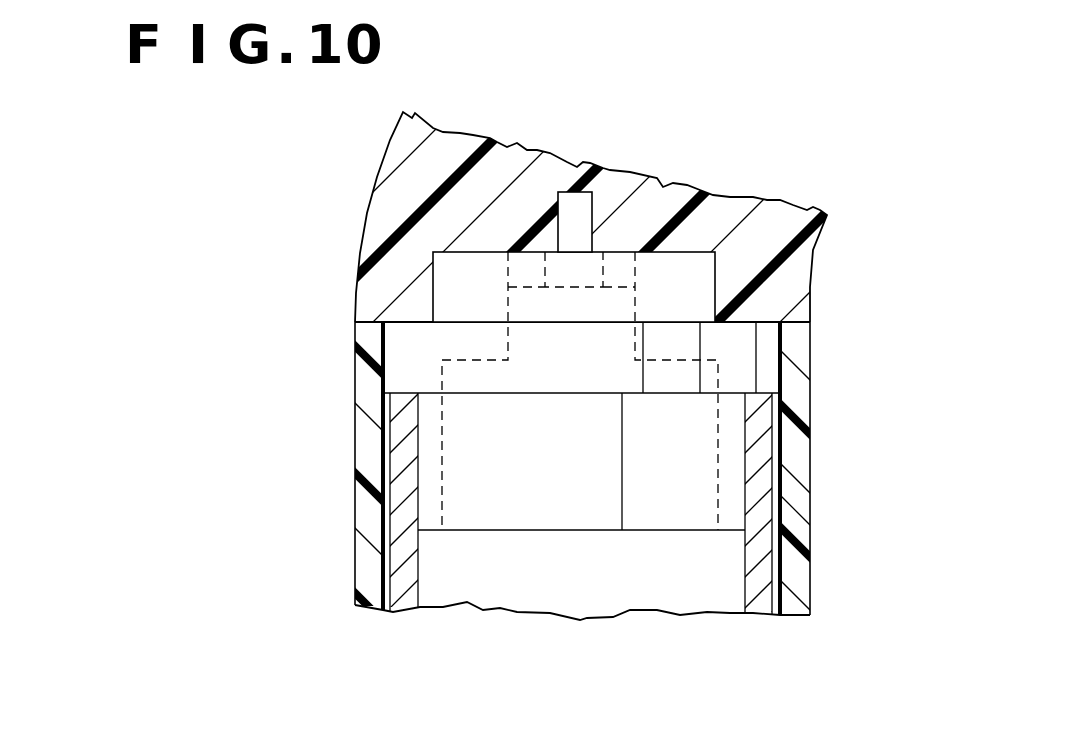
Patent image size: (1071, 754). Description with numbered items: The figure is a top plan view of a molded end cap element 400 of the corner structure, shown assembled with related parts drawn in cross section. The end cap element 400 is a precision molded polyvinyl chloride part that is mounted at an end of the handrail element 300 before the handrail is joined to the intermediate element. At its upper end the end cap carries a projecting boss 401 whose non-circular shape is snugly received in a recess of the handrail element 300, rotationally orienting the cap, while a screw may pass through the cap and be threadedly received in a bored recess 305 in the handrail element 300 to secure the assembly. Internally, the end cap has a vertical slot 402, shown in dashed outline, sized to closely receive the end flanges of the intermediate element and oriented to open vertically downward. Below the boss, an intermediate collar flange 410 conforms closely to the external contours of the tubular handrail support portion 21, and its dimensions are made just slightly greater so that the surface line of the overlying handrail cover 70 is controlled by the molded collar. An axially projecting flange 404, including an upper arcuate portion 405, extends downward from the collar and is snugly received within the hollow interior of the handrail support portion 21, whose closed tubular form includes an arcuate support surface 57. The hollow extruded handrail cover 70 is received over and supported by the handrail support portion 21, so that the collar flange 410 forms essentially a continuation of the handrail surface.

The handrail element 300 is at (488, 190).
The bored recess 305 is at (595, 232).
The projecting boss 401 is at (680, 275).
The vertical slot 402 is at (503, 302).
The intermediate collar flange 410 is at (412, 348).
The axially projecting flange 404 is at (480, 434).
The end cap element 400 is at (570, 482).
The handrail support portion 21 is at (440, 573).
The arcuate support surface 57 is at (755, 494).
The handrail cover 70 is at (798, 396).
The upper arcuate portion 405 is at (587, 512).